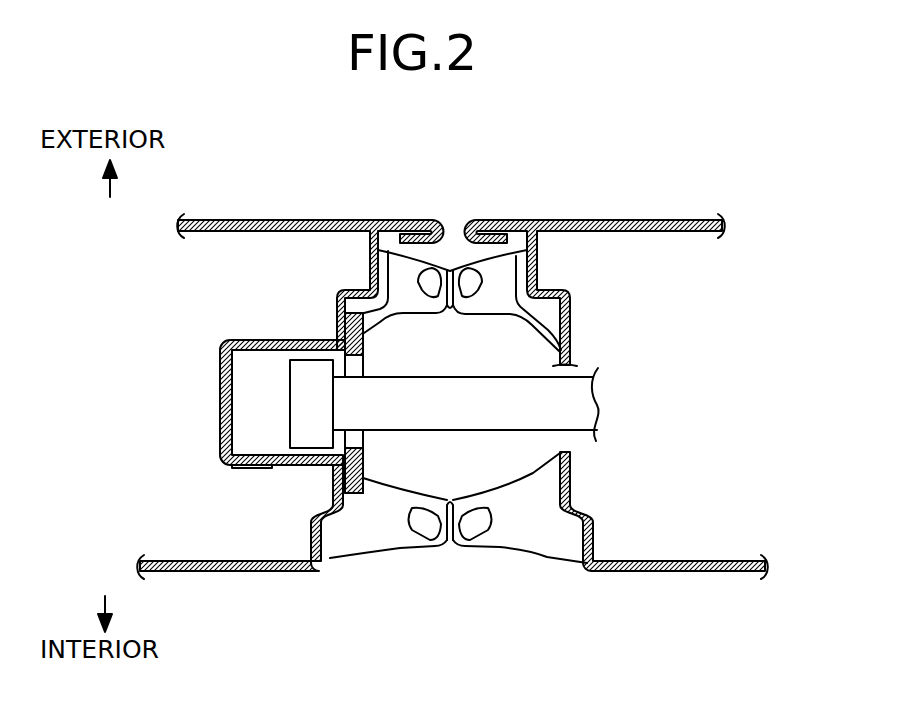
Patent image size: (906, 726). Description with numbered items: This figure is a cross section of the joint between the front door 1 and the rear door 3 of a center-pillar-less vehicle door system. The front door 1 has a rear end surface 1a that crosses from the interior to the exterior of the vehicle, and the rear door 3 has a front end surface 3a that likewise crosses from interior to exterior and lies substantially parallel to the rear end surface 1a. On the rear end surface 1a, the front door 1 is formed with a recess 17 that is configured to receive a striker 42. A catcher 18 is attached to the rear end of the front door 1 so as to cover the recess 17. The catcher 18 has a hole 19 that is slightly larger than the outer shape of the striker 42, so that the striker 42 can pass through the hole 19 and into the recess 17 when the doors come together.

The front door 1 is at (275, 219).
The rear door 3 is at (593, 219).
The rear end surface 1a is at (357, 507).
The front end surface 3a is at (560, 452).
The recess 17 is at (254, 448).
The catcher 18 is at (366, 354).
The hole 19 is at (378, 438).
The striker 42 is at (598, 408).